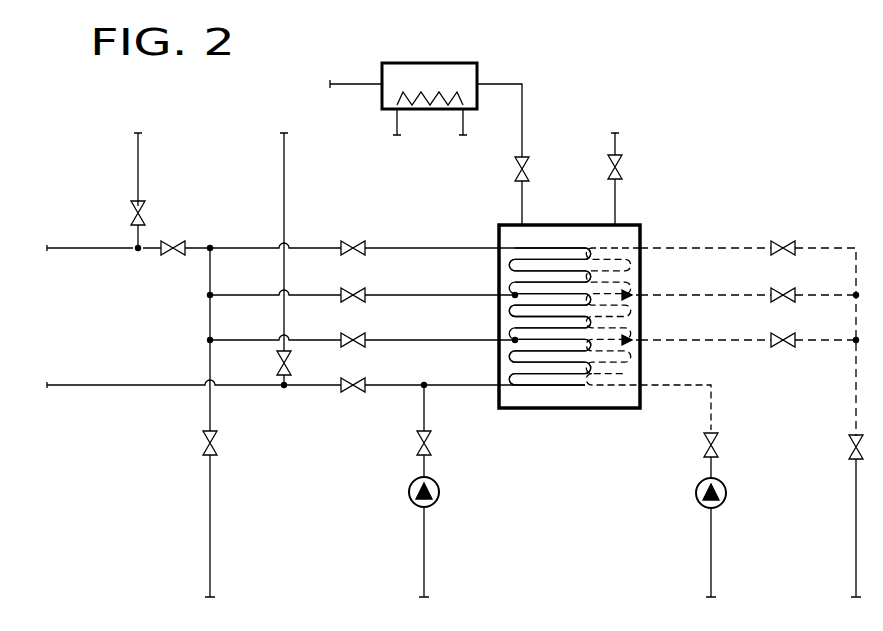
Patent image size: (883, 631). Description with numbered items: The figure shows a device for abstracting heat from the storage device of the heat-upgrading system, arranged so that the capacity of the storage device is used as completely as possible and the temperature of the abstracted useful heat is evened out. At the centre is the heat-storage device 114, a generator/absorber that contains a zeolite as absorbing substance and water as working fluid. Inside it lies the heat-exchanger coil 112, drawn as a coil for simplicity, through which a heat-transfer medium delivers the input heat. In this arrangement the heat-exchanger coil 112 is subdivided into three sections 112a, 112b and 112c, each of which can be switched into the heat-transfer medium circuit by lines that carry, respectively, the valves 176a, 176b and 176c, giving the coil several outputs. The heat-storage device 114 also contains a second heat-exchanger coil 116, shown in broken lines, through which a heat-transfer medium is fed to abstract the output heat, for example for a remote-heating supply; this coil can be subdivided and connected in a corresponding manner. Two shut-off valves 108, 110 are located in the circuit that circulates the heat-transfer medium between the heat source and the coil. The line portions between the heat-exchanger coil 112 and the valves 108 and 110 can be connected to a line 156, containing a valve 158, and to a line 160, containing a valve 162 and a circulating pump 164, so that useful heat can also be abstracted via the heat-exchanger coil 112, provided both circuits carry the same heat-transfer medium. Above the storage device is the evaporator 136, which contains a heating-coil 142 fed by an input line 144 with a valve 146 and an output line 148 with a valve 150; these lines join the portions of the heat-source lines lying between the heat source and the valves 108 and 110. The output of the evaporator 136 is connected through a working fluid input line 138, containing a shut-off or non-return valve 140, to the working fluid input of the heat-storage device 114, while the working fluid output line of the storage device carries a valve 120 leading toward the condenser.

The shut-off valve 108 is at (174, 242).
The shut-off valve 110 is at (360, 382).
The heat-exchanger coil 112 is at (548, 390).
The section of heat-exchanger coil 112a is at (515, 362).
The section of heat-exchanger coil 112b is at (515, 316).
The section of heat-exchanger coil 112c is at (515, 271).
The heat-storage device 114 is at (642, 232).
The heat-exchanger coil 116 is at (615, 388).
The valve 120 is at (623, 167).
The evaporator 136 is at (463, 70).
The working fluid input line 138 is at (522, 84).
The shut-off valve or non-return valve 140 is at (514, 170).
The heating-coil 142 is at (438, 106).
The input line 144 is at (137, 150).
The valve 146 is at (132, 213).
The output line 148 is at (283, 150).
The valve 150 is at (277, 364).
The line 156 is at (212, 412).
The valve 158 is at (203, 443).
The line 160 is at (424, 413).
The valve 162 is at (416, 443).
The circulating pump 164 is at (409, 492).
The valve 176a is at (360, 337).
The valve 176b is at (360, 291).
The valve 176c is at (360, 245).